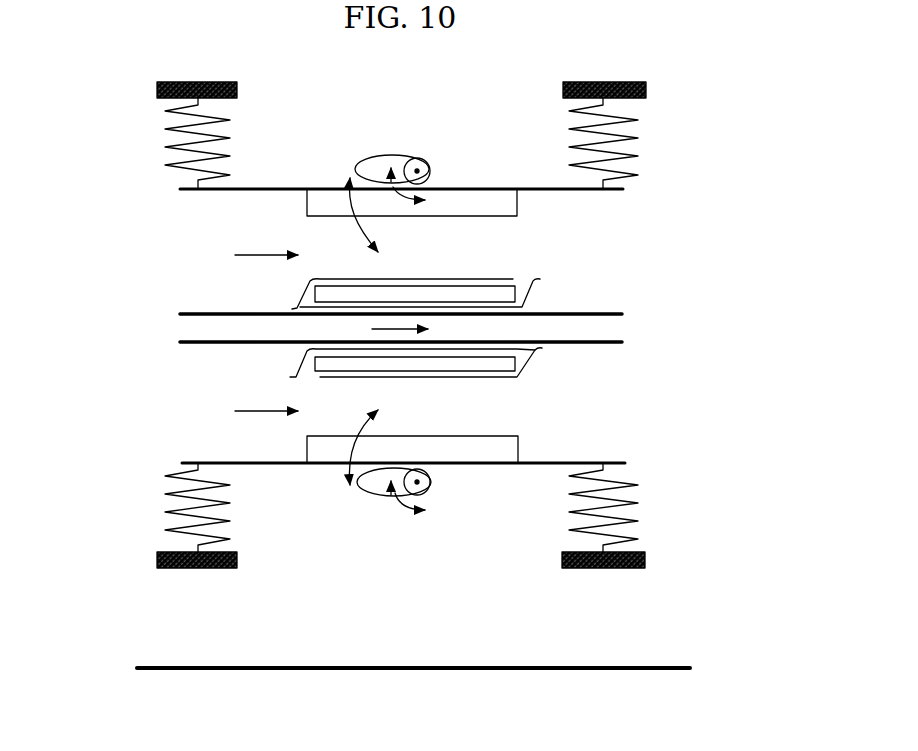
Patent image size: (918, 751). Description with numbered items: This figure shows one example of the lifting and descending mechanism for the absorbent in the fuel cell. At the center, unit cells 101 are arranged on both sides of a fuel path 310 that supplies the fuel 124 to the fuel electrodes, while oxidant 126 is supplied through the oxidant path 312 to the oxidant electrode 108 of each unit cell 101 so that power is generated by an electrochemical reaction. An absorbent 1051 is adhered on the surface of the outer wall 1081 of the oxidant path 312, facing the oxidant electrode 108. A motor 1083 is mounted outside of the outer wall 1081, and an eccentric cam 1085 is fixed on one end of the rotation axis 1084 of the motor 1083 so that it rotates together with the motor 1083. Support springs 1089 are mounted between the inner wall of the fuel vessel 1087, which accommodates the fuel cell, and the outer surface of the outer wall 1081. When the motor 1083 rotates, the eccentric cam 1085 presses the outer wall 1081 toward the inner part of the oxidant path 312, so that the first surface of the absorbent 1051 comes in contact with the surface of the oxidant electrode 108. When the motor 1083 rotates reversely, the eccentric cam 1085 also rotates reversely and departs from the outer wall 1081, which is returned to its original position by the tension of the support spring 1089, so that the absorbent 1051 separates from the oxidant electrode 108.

The outer wall 1081 is at (278, 189).
The motor 1083 is at (418, 158).
The rotation axis 1084 is at (430, 170).
The eccentric cam 1085 is at (380, 155).
The fuel vessel 1087 is at (220, 98).
The support spring 1089 is at (165, 150).
The oxidant electrode 108 is at (458, 280).
The absorbent 1051 is at (518, 203).
The unit cell 101 is at (513, 272).
The fuel path 310 is at (610, 330).
The oxidant path 312 is at (222, 312).
The oxidant 126 is at (295, 333).
The fuel 124 is at (423, 329).